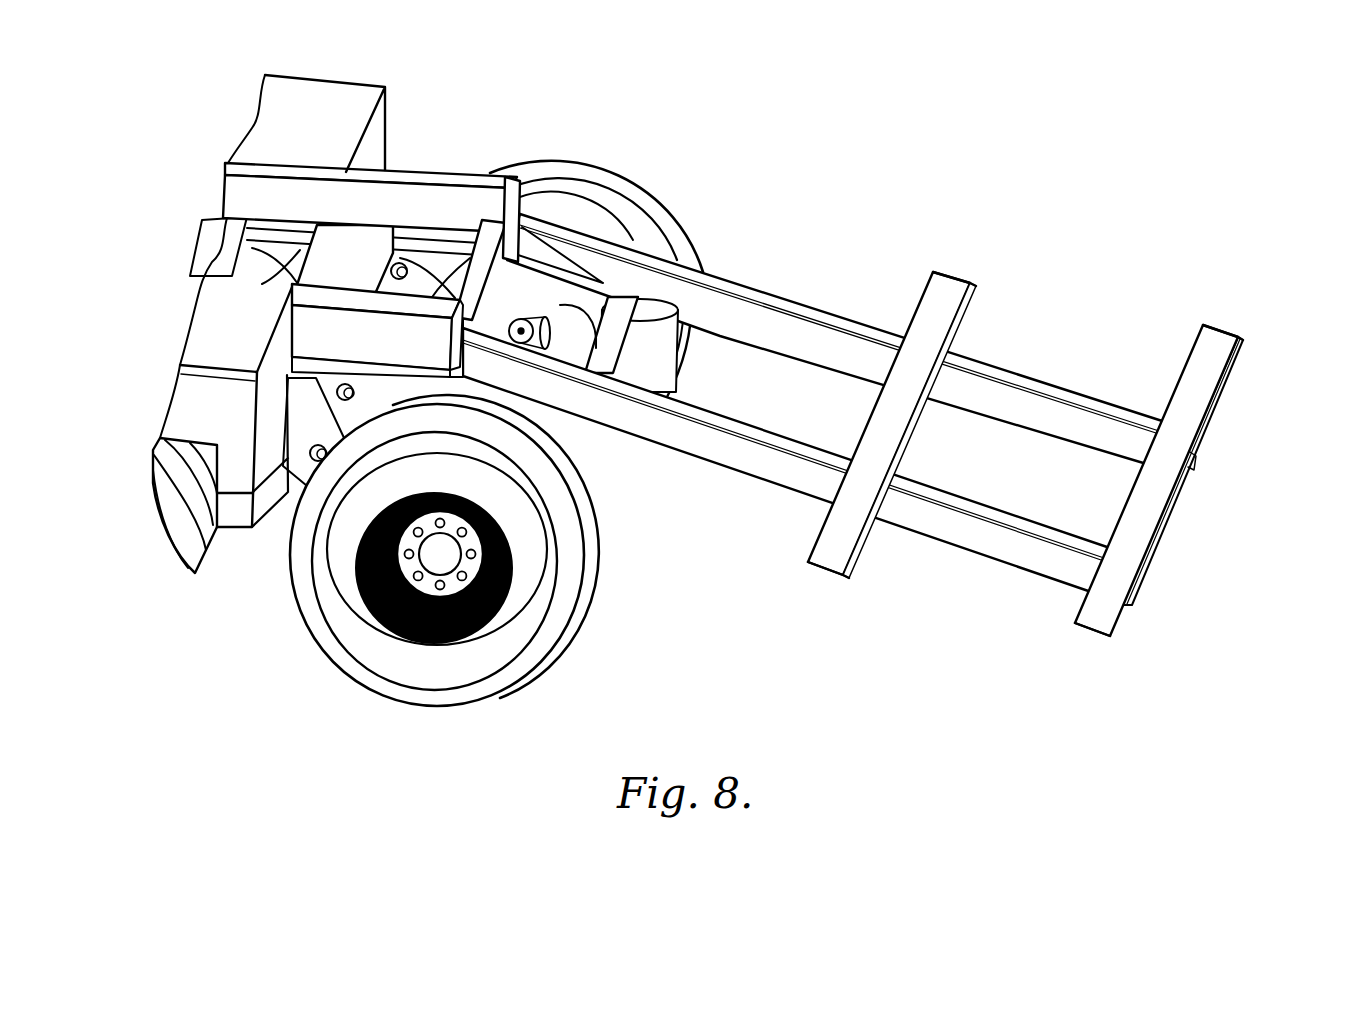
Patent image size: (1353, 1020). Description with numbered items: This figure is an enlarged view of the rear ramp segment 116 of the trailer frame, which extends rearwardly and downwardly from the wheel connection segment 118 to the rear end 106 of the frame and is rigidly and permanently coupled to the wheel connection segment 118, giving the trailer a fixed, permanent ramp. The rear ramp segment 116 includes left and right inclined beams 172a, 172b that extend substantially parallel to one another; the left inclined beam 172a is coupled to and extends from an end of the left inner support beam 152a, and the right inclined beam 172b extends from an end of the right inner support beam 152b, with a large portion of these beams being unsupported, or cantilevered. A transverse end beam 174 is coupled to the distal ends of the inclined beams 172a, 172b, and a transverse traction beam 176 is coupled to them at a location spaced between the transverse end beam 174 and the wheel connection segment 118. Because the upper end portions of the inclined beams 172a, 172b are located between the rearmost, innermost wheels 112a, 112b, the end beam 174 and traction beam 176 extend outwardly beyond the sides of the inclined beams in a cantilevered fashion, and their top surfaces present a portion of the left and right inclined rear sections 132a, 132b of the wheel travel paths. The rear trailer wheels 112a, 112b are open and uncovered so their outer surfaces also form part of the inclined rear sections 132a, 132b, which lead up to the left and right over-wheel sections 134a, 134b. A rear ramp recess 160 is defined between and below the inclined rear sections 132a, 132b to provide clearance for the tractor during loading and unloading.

The rear end 106 is at (1162, 502).
The left rear trailer wheel 112a is at (593, 537).
The right rear trailer wheel 112b is at (630, 237).
The rear ramp segment 116 is at (713, 265).
The wheel connection segment 118 is at (400, 168).
The left inclined rear section 132a is at (1102, 578).
The right inclined rear section 132b is at (600, 185).
The left over-wheel section 134a is at (203, 346).
The right over-wheel section 134b is at (272, 107).
The left inner support beam 152a is at (327, 327).
The right inner support beam 152b is at (470, 176).
The rear ramp recess 160 is at (725, 350).
The left inclined beam 172a is at (808, 483).
The right inclined beam 172b is at (850, 353).
The transverse end beam 174 is at (1123, 530).
The transverse traction beam 176 is at (887, 428).